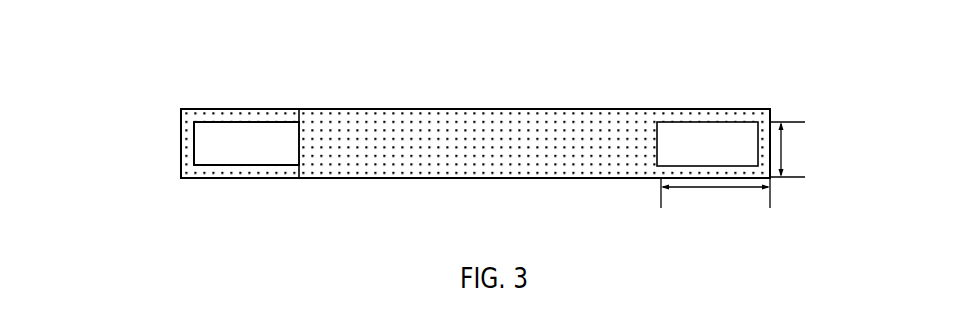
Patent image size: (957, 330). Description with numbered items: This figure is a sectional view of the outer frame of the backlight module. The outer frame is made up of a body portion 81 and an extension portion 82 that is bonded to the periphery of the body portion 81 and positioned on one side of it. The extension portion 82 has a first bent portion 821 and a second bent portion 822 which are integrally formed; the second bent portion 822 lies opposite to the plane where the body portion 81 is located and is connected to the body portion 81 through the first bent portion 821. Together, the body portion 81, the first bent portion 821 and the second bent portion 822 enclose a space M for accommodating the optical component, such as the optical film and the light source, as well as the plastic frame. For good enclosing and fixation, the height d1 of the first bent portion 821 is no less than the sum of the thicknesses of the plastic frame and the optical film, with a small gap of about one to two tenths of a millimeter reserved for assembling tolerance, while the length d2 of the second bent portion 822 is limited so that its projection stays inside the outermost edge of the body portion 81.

The body portion 81 is at (405, 120).
The extension portion 82 is at (752, 148).
The first bent portion 821 is at (171, 150).
The second bent portion 822 is at (213, 170).
The space M is at (207, 125).
The height of the first bent portion d1 is at (791, 149).
The length of the first and second portions of the second bent portion d2 is at (715, 197).